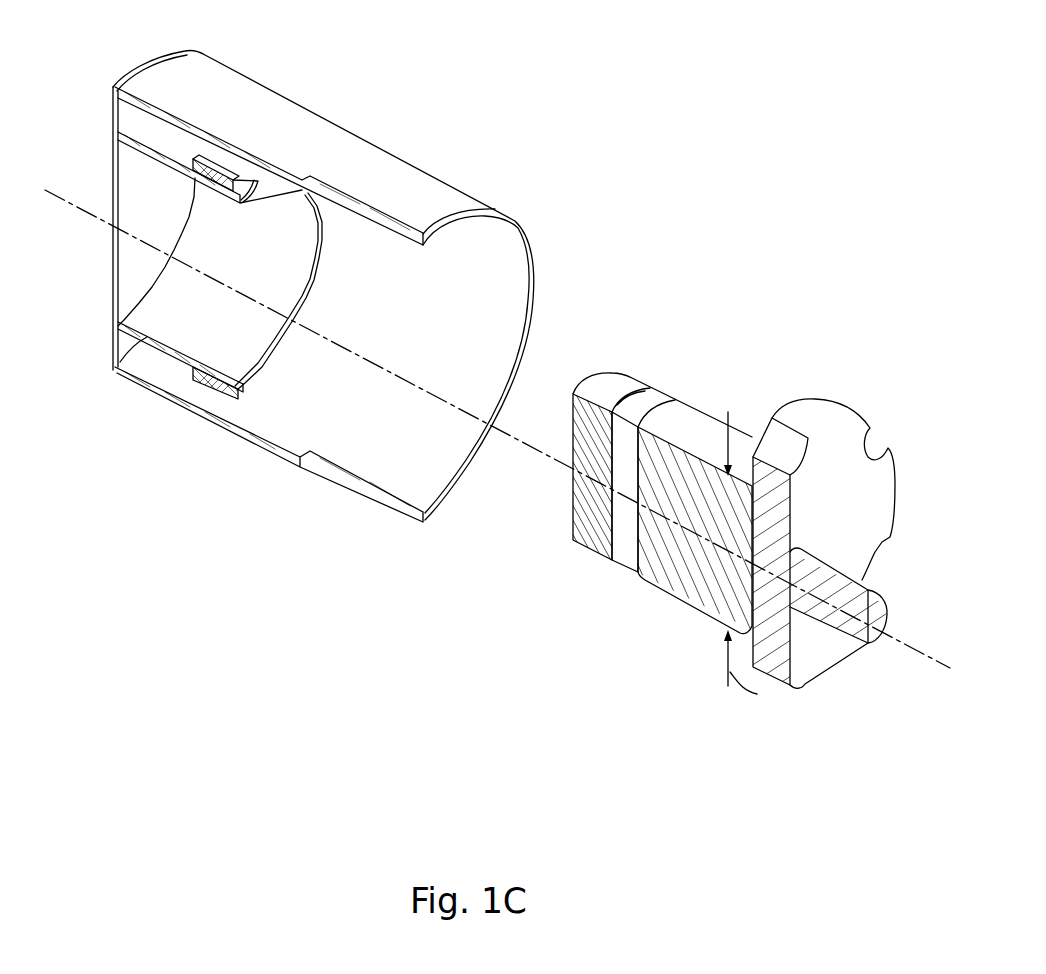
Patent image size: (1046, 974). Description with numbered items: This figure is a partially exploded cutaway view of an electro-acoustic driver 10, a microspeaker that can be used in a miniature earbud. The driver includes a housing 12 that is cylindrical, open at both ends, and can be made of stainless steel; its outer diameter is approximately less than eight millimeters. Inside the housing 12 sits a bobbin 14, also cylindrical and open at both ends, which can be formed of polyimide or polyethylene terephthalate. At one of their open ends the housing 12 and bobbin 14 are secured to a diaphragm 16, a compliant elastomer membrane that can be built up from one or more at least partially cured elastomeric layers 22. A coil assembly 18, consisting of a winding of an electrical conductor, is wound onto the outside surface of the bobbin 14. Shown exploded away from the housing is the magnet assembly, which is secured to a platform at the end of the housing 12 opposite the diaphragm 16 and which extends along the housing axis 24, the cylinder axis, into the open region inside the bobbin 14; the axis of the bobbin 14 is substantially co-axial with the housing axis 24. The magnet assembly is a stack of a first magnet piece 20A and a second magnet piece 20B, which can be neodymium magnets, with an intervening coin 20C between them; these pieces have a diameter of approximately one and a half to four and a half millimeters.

The electro-acoustic driver 10 is at (607, 241).
The housing 12 is at (437, 201).
The bobbin 14 is at (170, 142).
The diaphragm 16 is at (115, 292).
The coil assembly 18 is at (222, 162).
The magnet piece 20A is at (580, 542).
The magnet piece 20B is at (696, 587).
The coin 20C is at (620, 556).
The elastomeric layer 22 is at (828, 668).
The housing axis 24 is at (917, 645).